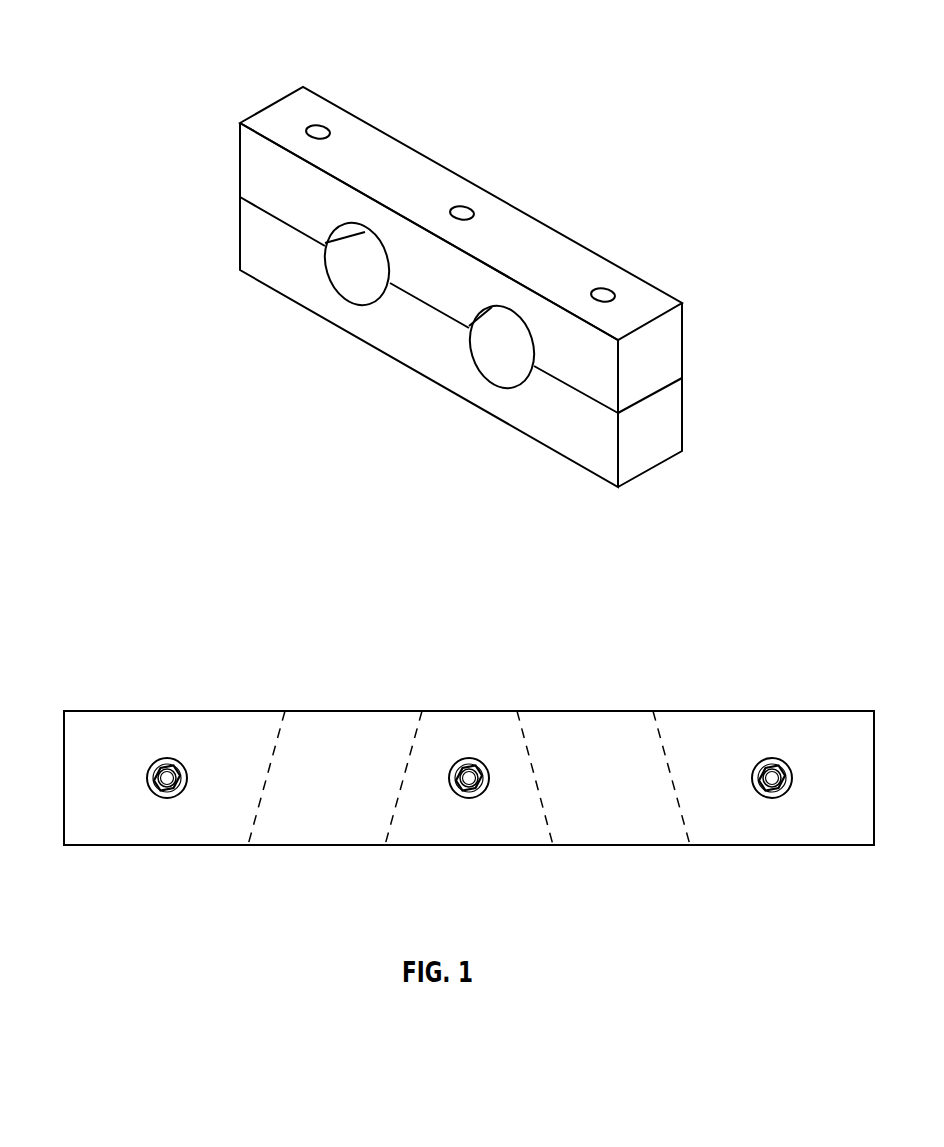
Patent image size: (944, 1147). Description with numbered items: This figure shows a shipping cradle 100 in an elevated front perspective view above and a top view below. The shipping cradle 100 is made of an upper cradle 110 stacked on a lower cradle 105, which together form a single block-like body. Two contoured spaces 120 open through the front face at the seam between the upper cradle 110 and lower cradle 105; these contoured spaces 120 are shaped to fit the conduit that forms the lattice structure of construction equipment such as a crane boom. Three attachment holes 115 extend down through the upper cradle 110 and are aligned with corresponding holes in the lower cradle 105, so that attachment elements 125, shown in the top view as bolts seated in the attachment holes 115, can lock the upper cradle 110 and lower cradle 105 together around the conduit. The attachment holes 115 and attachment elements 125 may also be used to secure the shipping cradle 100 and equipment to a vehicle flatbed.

The shipping cradle 100 is at (226, 35).
The lower cradle 105 is at (252, 242).
The upper cradle 110 is at (257, 162).
The attachment holes 115 is at (318, 130).
The contoured spaces 120 is at (357, 278).
The attachment elements 125 is at (158, 760).